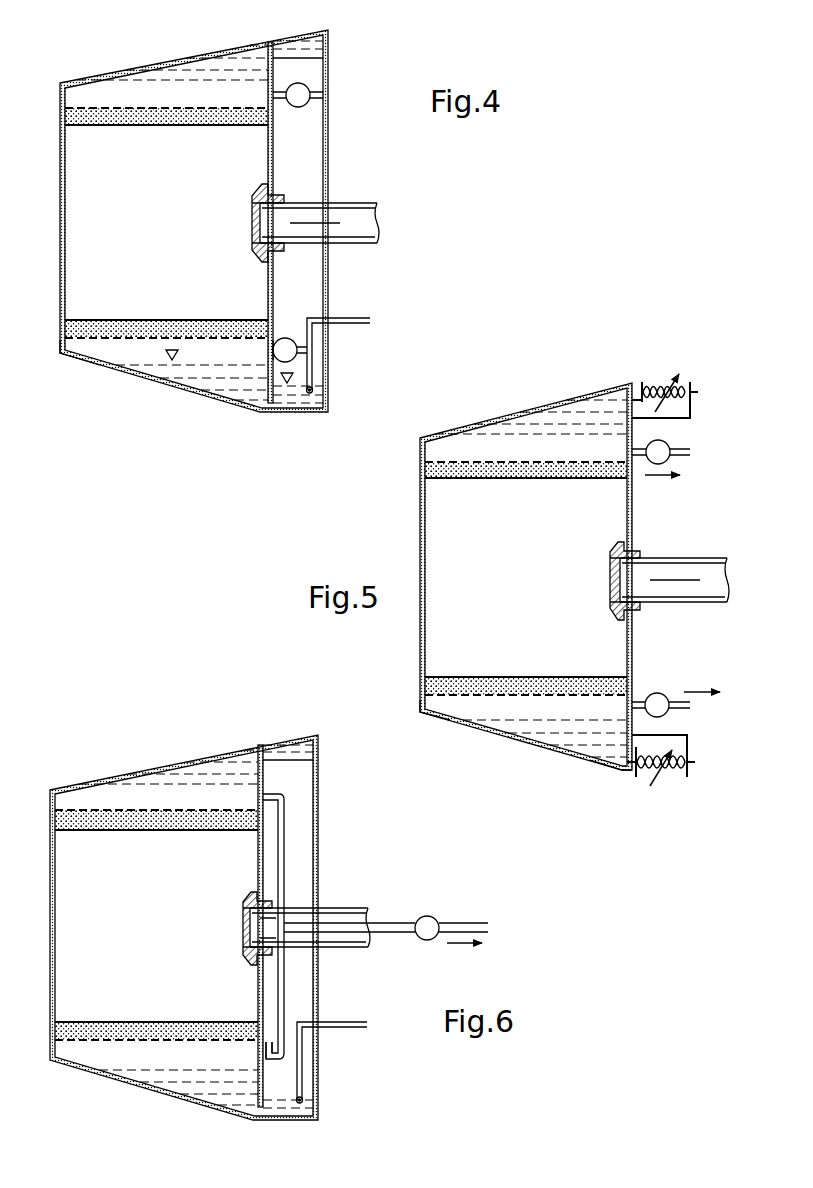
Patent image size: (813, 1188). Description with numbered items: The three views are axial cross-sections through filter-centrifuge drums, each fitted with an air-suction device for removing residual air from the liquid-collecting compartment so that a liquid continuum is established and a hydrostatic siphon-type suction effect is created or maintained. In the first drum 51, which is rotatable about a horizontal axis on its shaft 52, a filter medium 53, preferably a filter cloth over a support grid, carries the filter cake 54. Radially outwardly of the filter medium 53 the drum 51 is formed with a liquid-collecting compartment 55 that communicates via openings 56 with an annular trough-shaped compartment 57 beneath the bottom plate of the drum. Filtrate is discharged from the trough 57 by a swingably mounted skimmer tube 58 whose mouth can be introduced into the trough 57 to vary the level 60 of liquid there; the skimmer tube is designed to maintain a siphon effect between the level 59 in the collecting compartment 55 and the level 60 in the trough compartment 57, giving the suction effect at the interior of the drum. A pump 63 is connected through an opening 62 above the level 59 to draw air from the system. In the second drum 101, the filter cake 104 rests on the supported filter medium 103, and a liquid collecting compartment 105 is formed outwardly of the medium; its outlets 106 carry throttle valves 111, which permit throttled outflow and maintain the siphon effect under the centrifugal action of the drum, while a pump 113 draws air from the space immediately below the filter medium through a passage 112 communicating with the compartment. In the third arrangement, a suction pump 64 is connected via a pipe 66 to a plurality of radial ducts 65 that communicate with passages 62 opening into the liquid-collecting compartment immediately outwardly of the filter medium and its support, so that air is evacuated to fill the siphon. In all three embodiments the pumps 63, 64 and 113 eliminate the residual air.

In FIG. 4, the drum 51 is at (176, 58).
In FIG. 4, the shaft 52 is at (343, 214).
In FIG. 4, the filter medium 53 is at (72, 343).
In FIG. 4, the filter cake 54 is at (118, 326).
In FIG. 4, the liquid-collecting compartment 55 is at (108, 93).
In FIG. 4, the openings 56 is at (264, 413).
In FIG. 4, the annular trough-shaped compartment 57 is at (305, 72).
In FIG. 4, the skimmer tube 58 is at (353, 317).
In FIG. 4, the level of liquid in collecting compartment 59 is at (164, 360).
In FIG. 4, the level of liquid in trough compartment 60 is at (289, 385).
In FIG. 4, the opening 62 is at (263, 352).
In FIG. 6, the opening 62 is at (250, 1040).
In FIG. 4, the pump 63 is at (284, 337).
In FIG. 5, the drum 101 is at (539, 403).
In FIG. 5, the filter medium 103 is at (436, 700).
In FIG. 5, the filter cake 104 is at (468, 480).
In FIG. 5, the liquid collecting compartment 105 is at (482, 712).
In FIG. 5, the outlets 106 is at (618, 772).
In FIG. 5, the throttle valves 111 is at (643, 784).
In FIG. 5, the passage 112 is at (626, 676).
In FIG. 5, the pump 113 is at (667, 697).
In FIG. 6, the suction pump 64 is at (428, 915).
In FIG. 6, the radial ducts 65 is at (285, 982).
In FIG. 6, the pipe 66 is at (395, 934).